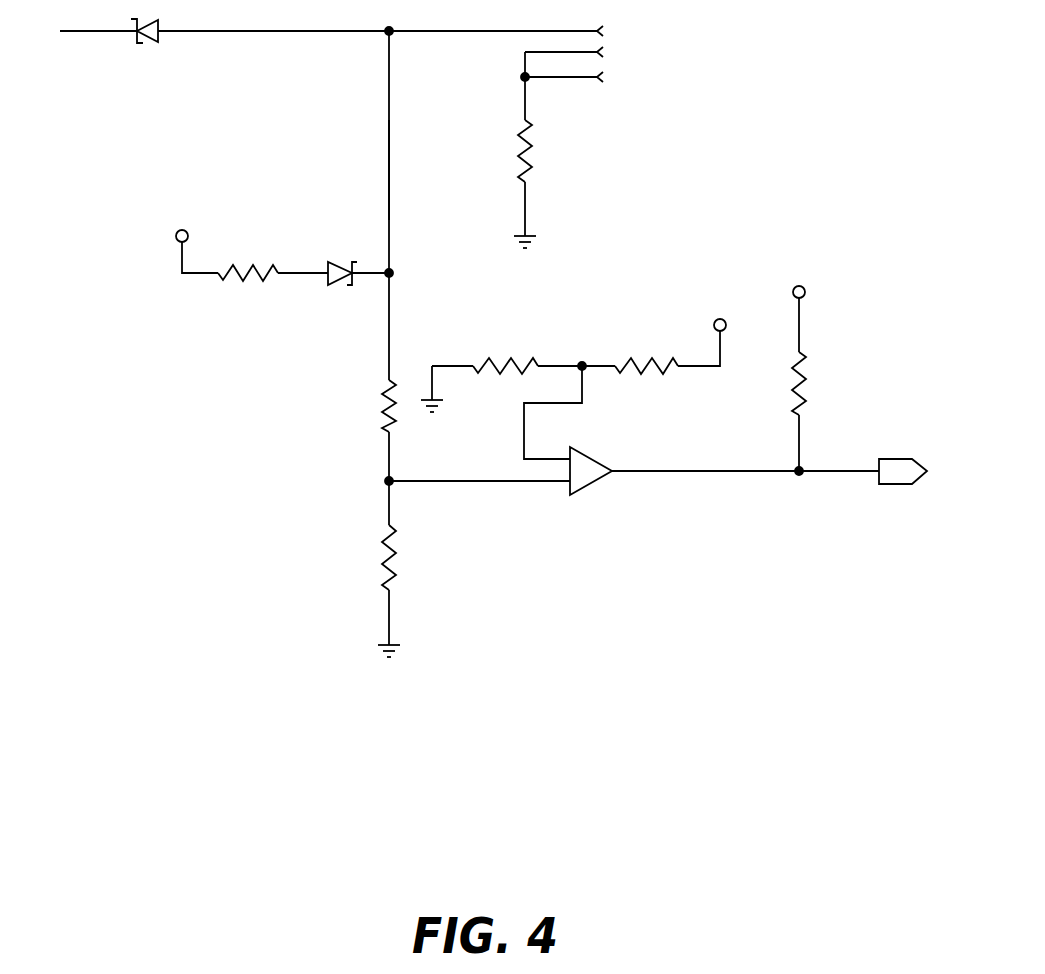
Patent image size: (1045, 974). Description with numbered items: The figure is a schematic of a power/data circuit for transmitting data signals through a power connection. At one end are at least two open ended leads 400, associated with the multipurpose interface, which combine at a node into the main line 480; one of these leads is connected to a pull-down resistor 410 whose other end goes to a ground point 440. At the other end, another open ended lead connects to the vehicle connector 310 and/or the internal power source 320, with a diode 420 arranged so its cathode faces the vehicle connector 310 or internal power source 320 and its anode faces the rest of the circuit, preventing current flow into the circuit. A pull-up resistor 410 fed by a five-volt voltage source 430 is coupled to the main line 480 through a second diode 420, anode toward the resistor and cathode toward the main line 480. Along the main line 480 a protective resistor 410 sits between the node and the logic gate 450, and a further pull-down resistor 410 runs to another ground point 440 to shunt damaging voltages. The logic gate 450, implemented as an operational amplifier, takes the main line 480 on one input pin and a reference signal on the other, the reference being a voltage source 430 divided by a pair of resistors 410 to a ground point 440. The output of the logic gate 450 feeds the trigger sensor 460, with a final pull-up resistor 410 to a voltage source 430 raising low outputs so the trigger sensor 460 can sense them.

The vehicle connector 310 is at (224, 52).
The internal power source 320 is at (328, 66).
The open ended leads 400 is at (614, 31).
The resistor 410 is at (548, 146).
The diode 420 is at (172, 38).
The voltage source 430 is at (168, 236).
The ground point 440 is at (502, 238).
The logic gate 450 is at (616, 490).
The trigger sensor 460 is at (858, 478).
The main line 480 is at (380, 165).